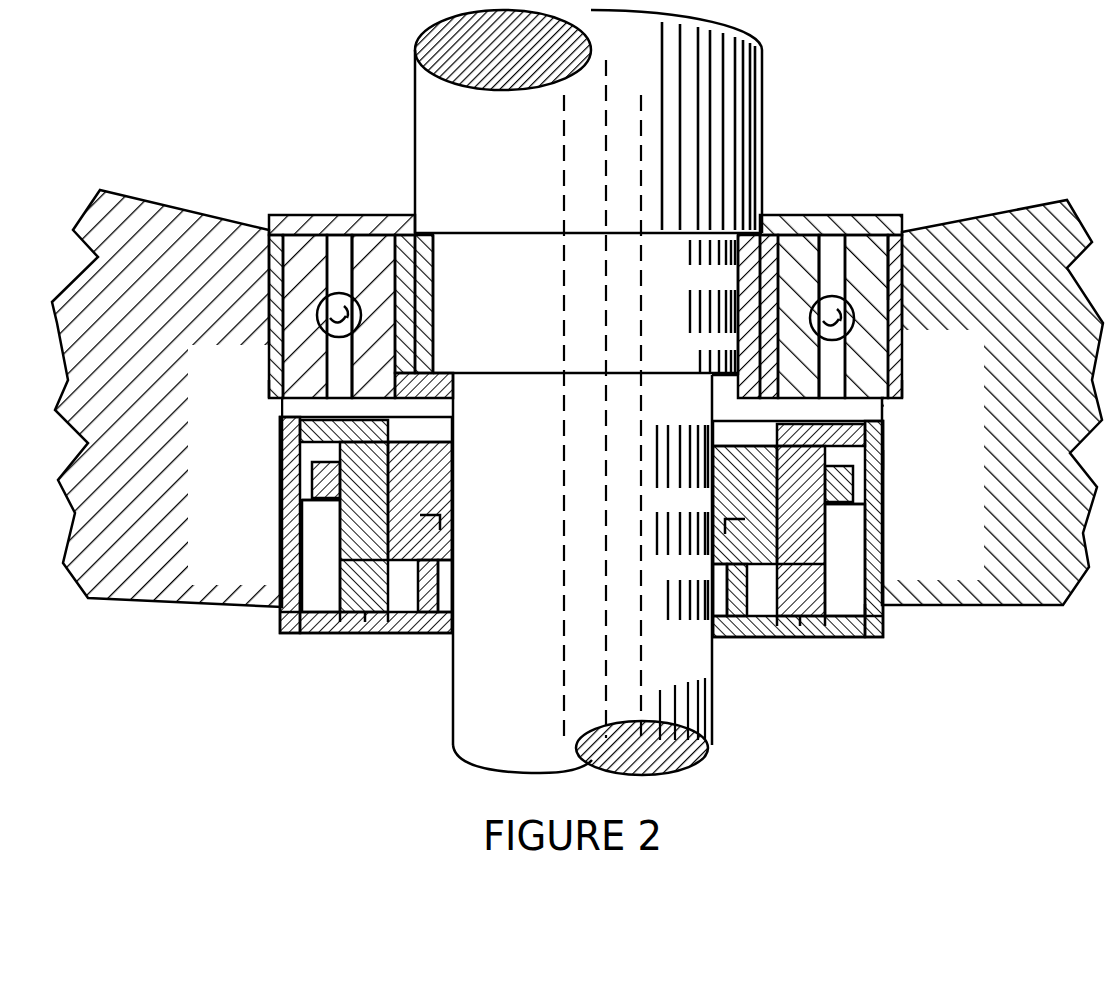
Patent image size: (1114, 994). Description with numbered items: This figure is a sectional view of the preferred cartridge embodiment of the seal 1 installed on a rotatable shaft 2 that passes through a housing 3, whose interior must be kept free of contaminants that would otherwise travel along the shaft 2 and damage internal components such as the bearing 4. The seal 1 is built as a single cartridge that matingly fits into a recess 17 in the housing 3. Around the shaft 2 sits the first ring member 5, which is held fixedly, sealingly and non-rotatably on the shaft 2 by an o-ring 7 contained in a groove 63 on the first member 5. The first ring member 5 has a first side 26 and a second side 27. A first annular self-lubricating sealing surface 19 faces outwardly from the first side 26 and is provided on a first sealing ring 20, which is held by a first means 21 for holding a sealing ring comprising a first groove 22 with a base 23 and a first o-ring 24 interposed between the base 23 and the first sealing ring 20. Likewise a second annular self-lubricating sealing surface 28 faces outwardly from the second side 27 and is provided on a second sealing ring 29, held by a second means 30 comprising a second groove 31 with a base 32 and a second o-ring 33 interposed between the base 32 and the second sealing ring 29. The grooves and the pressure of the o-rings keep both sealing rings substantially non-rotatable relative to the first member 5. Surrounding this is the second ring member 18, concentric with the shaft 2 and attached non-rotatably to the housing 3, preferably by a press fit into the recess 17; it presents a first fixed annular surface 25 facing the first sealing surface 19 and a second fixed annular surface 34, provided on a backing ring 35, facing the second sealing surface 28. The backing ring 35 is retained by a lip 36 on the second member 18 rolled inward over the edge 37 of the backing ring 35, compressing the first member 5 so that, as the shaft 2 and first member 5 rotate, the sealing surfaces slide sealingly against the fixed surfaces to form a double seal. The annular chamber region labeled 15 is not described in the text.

The seal 1 is at (596, 602).
The shaft 2 is at (712, 718).
The housing 3 is at (1035, 610).
The bearing 4 is at (585, 254).
The first ring member 5 is at (302, 640).
The o-ring 7 is at (455, 520).
The annular chamber 15 is at (285, 564).
The recess 17 is at (282, 470).
The second ring member 18 is at (285, 630).
The first annular self-lubricating sealing surface 19 is at (387, 638).
The first sealing ring 20 is at (440, 636).
The first means for holding a sealing ring 21 is at (442, 605).
The first groove 22 is at (286, 636).
The base 23 is at (330, 548).
The first o-ring 24 is at (883, 565).
The first fixed annular surface 25 is at (370, 638).
The first side 26 is at (345, 638).
The second side 27 is at (455, 452).
The second annular self-lubricating sealing surface 28 is at (388, 417).
The second sealing ring 29 is at (417, 417).
The second means for holding a sealing ring 30 is at (450, 540).
The second groove 31 is at (449, 417).
The base 32 is at (440, 555).
The second o-ring 33 is at (885, 458).
The second fixed annular surface 34 is at (392, 417).
The backing ring 35 is at (893, 350).
The lip 36 is at (280, 392).
The edge 37 is at (282, 425).
The groove 63 is at (455, 462).